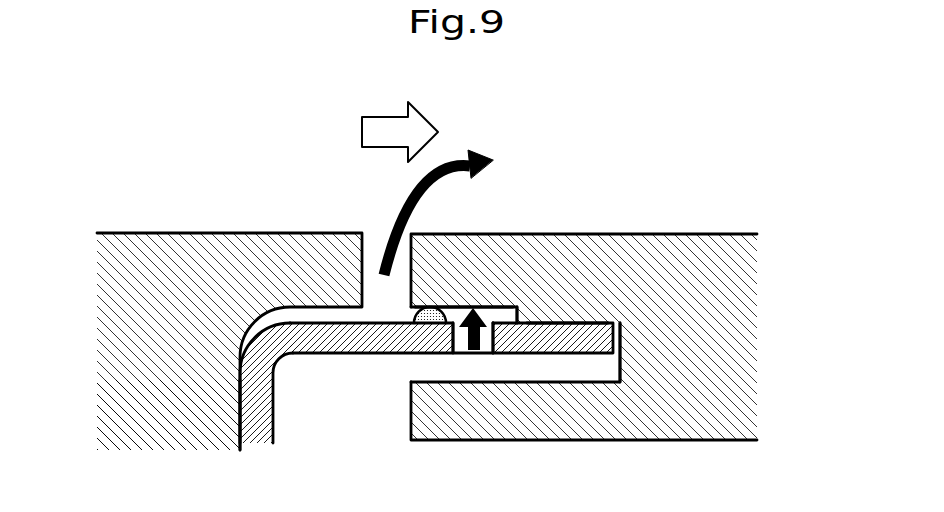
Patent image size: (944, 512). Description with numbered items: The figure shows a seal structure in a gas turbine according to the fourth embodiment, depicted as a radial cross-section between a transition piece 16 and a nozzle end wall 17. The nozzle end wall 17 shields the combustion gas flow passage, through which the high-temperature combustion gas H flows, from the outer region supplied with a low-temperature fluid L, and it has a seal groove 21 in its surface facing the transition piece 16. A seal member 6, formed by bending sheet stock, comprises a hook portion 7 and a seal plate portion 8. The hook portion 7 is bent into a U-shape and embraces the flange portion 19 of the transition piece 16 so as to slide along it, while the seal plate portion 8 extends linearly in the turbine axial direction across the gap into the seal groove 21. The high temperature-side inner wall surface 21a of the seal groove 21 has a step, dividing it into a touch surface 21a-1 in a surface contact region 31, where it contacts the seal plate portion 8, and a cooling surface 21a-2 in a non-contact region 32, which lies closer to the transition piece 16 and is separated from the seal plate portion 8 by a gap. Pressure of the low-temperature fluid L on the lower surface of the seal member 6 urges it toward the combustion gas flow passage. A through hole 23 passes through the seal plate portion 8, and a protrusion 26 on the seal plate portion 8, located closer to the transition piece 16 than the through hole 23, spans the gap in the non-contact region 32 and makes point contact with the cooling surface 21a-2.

The seal member 6 is at (426, 415).
The hook portion 7 is at (275, 415).
The seal plate portion 8 is at (327, 355).
The transition piece 16 is at (205, 233).
The nozzle end wall 17 is at (695, 442).
The flange portion 19 is at (162, 440).
The seal groove 21 is at (560, 373).
The high temperature-side inner wall surface 21a is at (670, 268).
The touch surface 21a-1 is at (625, 333).
The cooling surface 21a-2 is at (520, 320).
The through hole 23 is at (460, 350).
The protrusion 26 is at (413, 313).
The surface contact region 31 is at (608, 318).
The non-contact region 32 is at (513, 300).
The combustion gas H is at (400, 132).
The low-temperature fluid L is at (393, 205).